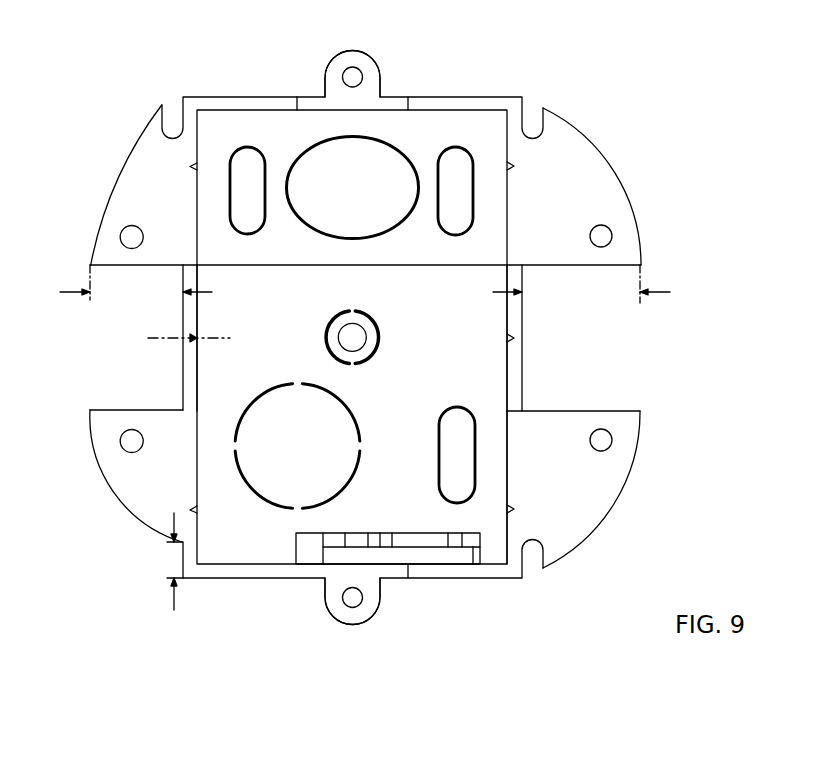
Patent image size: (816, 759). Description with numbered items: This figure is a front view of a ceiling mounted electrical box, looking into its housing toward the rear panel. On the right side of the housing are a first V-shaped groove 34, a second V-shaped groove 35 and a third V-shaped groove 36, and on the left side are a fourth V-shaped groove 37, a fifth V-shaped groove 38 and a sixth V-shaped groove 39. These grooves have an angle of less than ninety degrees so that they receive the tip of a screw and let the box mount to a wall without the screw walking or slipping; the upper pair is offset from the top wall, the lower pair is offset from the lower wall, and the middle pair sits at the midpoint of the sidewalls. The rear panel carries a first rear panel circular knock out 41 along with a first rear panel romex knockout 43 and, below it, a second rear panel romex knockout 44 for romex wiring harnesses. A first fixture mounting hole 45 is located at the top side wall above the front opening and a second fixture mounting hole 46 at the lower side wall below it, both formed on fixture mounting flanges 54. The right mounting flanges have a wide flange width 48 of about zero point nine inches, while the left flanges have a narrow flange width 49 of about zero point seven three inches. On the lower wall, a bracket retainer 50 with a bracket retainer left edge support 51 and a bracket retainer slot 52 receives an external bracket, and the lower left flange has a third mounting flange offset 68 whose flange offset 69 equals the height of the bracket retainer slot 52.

The first V-shaped groove 34 is at (523, 157).
The second V-shaped groove 35 is at (512, 338).
The third V-shaped groove 36 is at (515, 509).
The fourth V-shaped groove 37 is at (177, 160).
The fifth V-shaped groove 38 is at (192, 347).
The sixth V-shaped groove 39 is at (187, 508).
The first rear panel circular knock out 41 is at (368, 180).
The first rear panel romex knockout 43 is at (458, 178).
The second rear panel romex knockout 44 is at (458, 460).
The first fixture mounting hole 45 is at (352, 75).
The second fixture mounting hole 46 is at (354, 598).
The wide flange width 48 is at (602, 288).
The narrow flange width 49 is at (127, 292).
The bracket retainer 50 is at (472, 540).
The bracket retainer left edge support 51 is at (312, 560).
The bracket retainer slot 52 is at (423, 555).
The fixture mounting flanges 54 is at (340, 64).
The third mounting flange offset 68 is at (127, 572).
The flange offset 69 is at (173, 563).